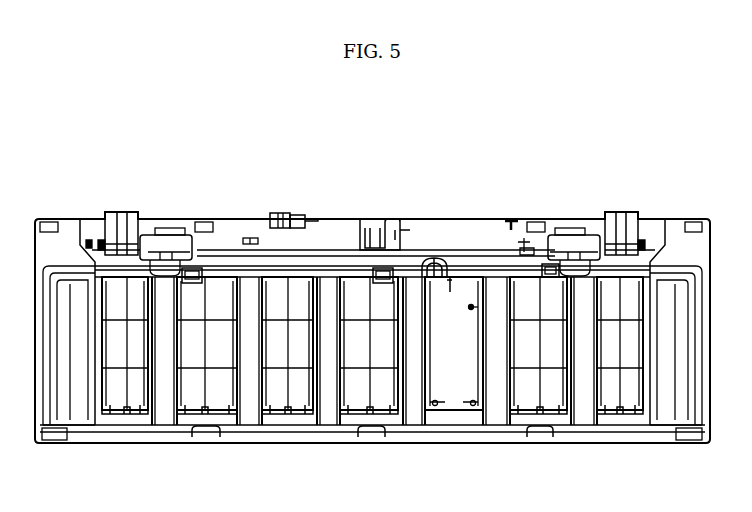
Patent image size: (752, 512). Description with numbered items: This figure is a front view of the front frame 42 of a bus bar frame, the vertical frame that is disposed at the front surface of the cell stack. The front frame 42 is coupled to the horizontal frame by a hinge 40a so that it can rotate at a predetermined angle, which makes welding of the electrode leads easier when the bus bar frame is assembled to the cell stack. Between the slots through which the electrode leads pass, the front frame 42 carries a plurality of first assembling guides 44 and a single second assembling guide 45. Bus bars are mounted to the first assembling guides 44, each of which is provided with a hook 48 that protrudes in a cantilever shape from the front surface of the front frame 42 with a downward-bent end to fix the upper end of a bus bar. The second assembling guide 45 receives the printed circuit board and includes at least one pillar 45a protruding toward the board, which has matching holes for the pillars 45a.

The front frame 42 is at (166, 118).
The hinge 40a is at (113, 212).
The first assembling guides 44 is at (117, 417).
The second assembling guide 45 is at (453, 406).
The pillar 45a is at (472, 305).
The hook 48 is at (193, 267).